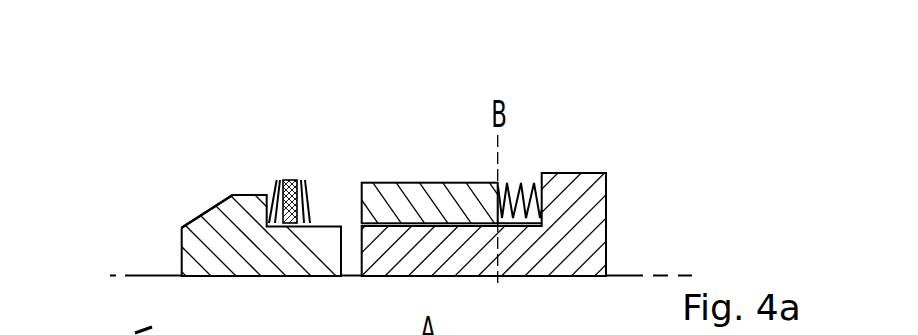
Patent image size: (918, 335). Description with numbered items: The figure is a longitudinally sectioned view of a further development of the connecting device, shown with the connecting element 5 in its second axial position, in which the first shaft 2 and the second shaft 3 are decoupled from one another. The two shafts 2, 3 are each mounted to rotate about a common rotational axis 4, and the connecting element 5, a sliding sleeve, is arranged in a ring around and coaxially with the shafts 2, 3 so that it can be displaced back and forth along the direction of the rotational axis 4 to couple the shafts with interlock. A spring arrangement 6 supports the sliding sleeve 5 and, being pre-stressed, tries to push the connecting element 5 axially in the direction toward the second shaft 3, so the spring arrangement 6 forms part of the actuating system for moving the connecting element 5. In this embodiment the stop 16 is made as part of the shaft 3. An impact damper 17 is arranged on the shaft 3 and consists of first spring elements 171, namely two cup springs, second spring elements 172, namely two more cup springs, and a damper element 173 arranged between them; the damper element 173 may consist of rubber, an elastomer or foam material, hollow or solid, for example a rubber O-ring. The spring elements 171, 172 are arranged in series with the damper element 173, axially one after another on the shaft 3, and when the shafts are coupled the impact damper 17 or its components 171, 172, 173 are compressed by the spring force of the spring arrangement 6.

The first shaft 2 is at (572, 193).
The second shaft 3 is at (213, 235).
The rotational axis 4 is at (147, 276).
The connecting element 5 is at (445, 195).
The spring arrangement 6 is at (522, 157).
The stop 16 is at (204, 189).
The impact damper 17 is at (292, 135).
The first spring elements 171 is at (277, 183).
The second spring elements 172 is at (309, 187).
The damper element 173 is at (289, 182).